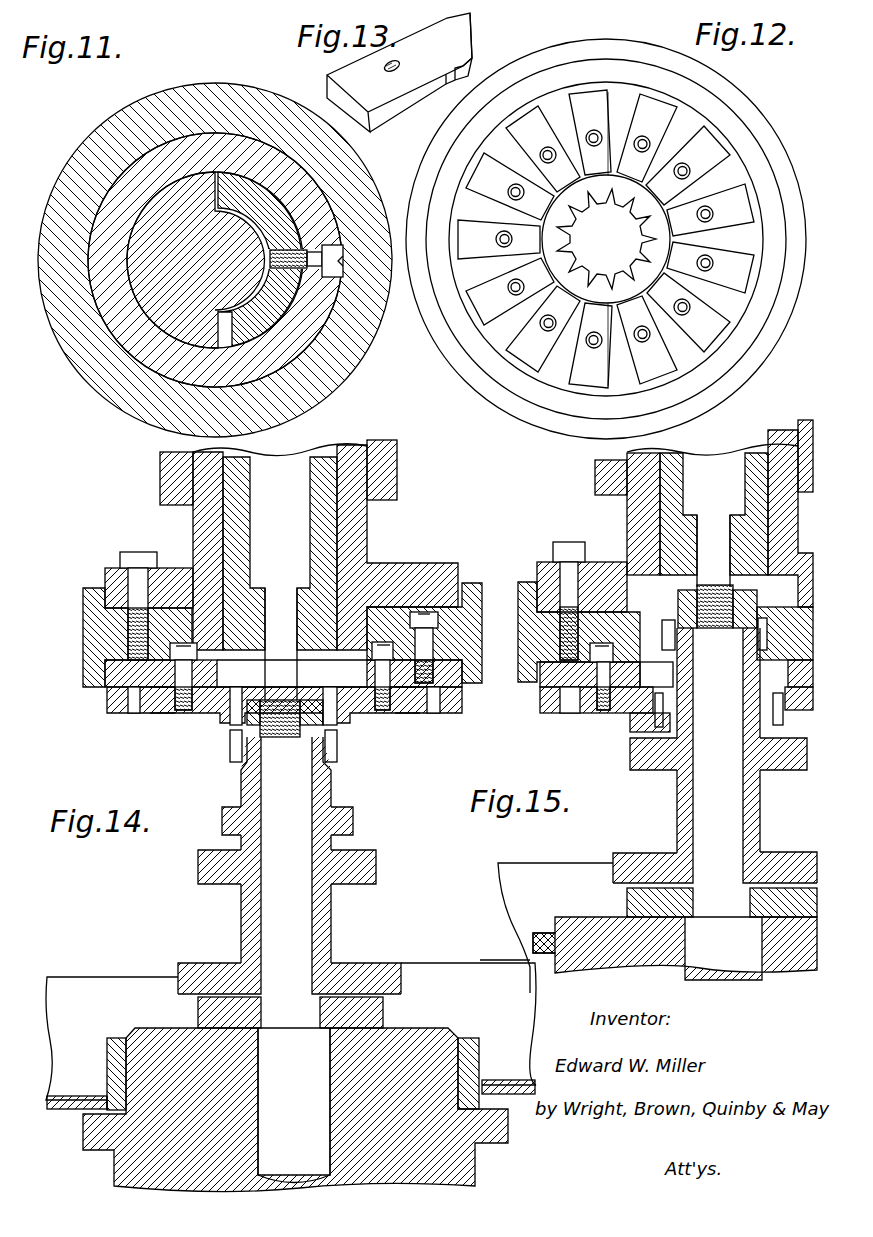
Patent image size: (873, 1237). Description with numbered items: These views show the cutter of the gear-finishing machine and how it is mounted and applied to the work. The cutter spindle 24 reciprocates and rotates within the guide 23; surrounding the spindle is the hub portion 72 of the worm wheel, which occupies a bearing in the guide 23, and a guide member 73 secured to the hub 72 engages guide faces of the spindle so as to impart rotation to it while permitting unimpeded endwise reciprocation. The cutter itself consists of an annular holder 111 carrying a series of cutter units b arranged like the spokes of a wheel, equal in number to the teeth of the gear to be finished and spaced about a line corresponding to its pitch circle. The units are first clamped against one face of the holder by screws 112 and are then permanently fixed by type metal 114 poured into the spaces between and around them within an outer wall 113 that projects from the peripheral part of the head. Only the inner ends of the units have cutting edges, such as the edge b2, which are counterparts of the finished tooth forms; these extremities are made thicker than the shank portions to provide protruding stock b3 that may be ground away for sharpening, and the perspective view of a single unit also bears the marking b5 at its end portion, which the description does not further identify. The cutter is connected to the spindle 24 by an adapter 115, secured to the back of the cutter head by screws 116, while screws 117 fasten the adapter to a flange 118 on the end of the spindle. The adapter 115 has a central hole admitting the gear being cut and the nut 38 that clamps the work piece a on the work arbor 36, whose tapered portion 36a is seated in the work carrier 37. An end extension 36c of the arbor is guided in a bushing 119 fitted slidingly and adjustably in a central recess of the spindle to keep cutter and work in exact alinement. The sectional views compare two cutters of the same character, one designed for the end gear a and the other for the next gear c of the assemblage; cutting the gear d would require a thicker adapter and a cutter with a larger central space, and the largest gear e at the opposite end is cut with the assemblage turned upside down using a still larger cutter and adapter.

In FIG. 11, the guide 23 is at (131, 394).
In FIG. 14, the guide 23 is at (388, 475).
In FIG. 15, the guide 23 is at (597, 477).
In FIG. 11, the cutter spindle 24 is at (167, 307).
In FIG. 14, the cutter spindle 24 is at (353, 543).
In FIG. 15, the cutter spindle 24 is at (643, 513).
In FIG. 11, the hub portion 72 is at (315, 331).
In FIG. 11, the guide member 73 is at (274, 218).
In FIG. 13, the cutter unit b is at (420, 62).
In FIG. 12, the cutter unit b is at (495, 232).
In FIG. 14, the cutter unit b is at (162, 705).
In FIG. 13, the cutting edge b2 is at (469, 58).
In FIG. 13, the lug notch b5 is at (455, 85).
In FIG. 14, the protruding stock b3 is at (232, 722).
In FIG. 12, the annular holder 111 is at (570, 386).
In FIG. 12, the screws 112 is at (552, 323).
In FIG. 14, the screws 112 is at (183, 673).
In FIG. 15, the screws 112 is at (613, 672).
In FIG. 12, the outer wall 113 is at (509, 379).
In FIG. 14, the outer wall 113 is at (462, 706).
In FIG. 15, the outer wall 113 is at (553, 695).
In FIG. 14, the type metal 114 is at (145, 687).
In FIG. 15, the type metal 114 is at (577, 713).
In FIG. 14, the adapter 115 is at (458, 623).
In FIG. 15, the adapter 115 is at (520, 602).
In FIG. 14, the screws 116 is at (427, 640).
In FIG. 14, the screws 117 is at (138, 587).
In FIG. 15, the screws 117 is at (567, 585).
In FIG. 14, the flange 118 is at (117, 563).
In FIG. 15, the flange 118 is at (602, 570).
In FIG. 14, the bushing 119 is at (238, 520).
In FIG. 15, the bushing 119 is at (673, 502).
In FIG. 14, the work arbor 36 is at (277, 799).
In FIG. 15, the work arbor 36 is at (715, 755).
In FIG. 14, the tapered portion 36a is at (276, 1075).
In FIG. 15, the tapered portion 36a is at (702, 955).
In FIG. 14, the end extension 36c is at (278, 647).
In FIG. 15, the end extension 36c is at (713, 545).
In FIG. 14, the work carrier 37 is at (159, 1168).
In FIG. 15, the work carrier 37 is at (590, 942).
In FIG. 14, the nut 38 is at (260, 703).
In FIG. 15, the nut 38 is at (760, 630).
In FIG. 14, the work piece a is at (242, 743).
In FIG. 15, the work piece a is at (645, 762).
In FIG. 14, the next gear c is at (349, 826).
In FIG. 15, the next gear c is at (643, 728).
In FIG. 14, the gear d is at (367, 866).
In FIG. 14, the gear e is at (198, 976).
In FIG. 15, the gear e is at (627, 870).